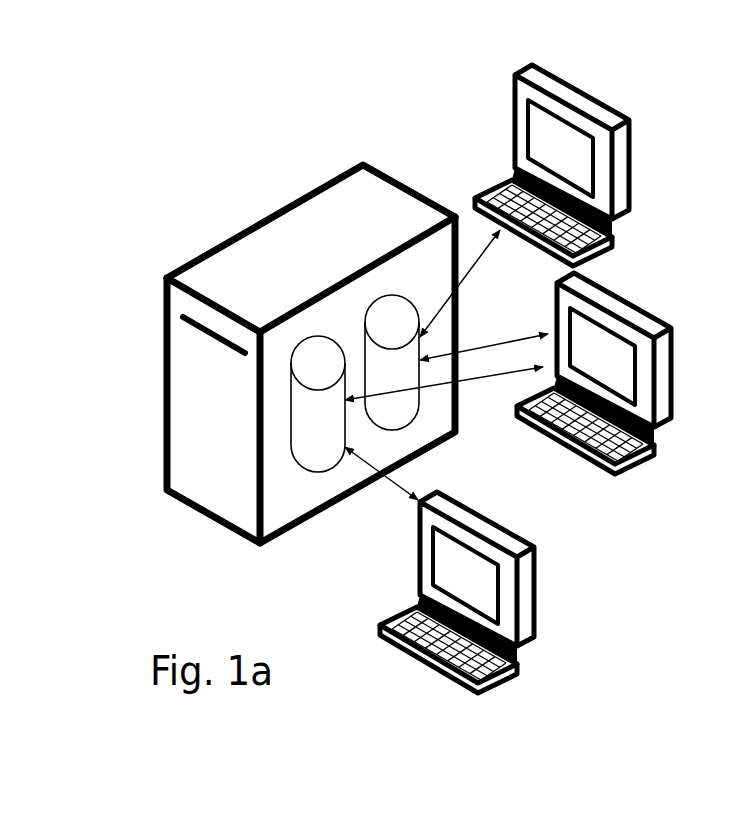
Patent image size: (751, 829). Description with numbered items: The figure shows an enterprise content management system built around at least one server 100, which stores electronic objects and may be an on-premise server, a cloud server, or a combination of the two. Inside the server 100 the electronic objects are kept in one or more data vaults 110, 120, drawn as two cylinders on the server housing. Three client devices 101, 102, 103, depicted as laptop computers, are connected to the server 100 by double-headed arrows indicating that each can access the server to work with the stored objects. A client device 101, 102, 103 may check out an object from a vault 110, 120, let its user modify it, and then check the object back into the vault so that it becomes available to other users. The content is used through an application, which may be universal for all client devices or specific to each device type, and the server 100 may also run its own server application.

The server 100 is at (311, 354).
The data vault 110 is at (318, 404).
The data vault 120 is at (392, 362).
The client device 101 is at (605, 102).
The client device 102 is at (602, 273).
The client device 103 is at (533, 607).